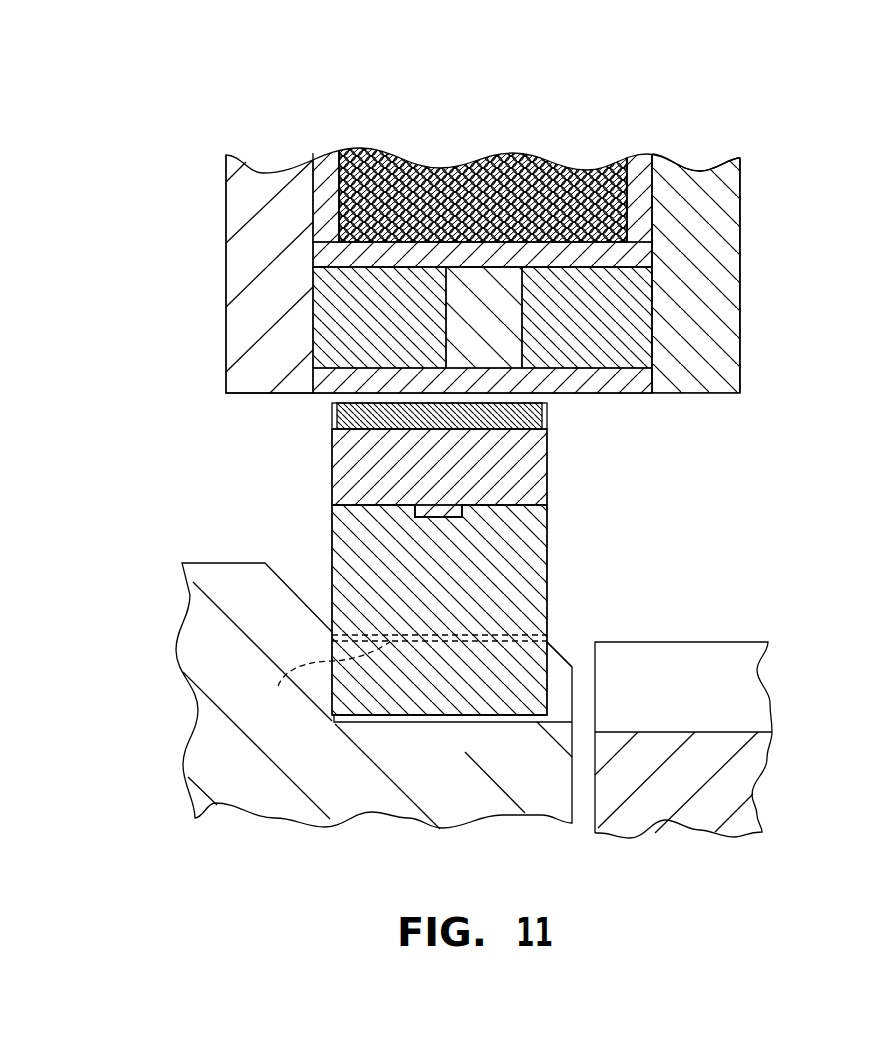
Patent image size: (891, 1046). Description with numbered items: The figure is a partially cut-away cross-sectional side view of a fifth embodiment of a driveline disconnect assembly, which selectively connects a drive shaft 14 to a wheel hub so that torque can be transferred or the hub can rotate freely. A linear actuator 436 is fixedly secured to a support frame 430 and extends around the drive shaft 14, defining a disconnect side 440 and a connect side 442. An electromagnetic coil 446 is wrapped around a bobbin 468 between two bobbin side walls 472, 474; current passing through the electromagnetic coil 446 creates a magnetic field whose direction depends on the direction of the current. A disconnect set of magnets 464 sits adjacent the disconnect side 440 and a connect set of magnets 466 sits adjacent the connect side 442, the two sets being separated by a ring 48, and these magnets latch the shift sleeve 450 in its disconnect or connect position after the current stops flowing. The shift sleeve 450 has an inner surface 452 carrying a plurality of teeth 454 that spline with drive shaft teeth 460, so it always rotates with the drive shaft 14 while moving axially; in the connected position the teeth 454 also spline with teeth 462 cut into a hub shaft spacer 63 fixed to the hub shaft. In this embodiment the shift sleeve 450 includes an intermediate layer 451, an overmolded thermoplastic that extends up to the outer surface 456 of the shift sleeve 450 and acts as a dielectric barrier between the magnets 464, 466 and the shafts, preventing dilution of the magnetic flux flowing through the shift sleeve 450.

The drive shaft 14 is at (400, 810).
The ring 48 is at (522, 303).
The hub shaft spacer 63 is at (692, 813).
The support frame 430 is at (740, 227).
The linear actuator 436 is at (226, 287).
The disconnect side 440 is at (226, 228).
The connect side 442 is at (740, 179).
The electromagnetic coil 446 is at (440, 167).
The shift sleeve 450 is at (332, 542).
The intermediate layer 451 is at (548, 470).
The inner surface 452 is at (402, 673).
The plurality of teeth 454 is at (458, 722).
The outer surface 456 is at (330, 400).
The drive shaft teeth 460 is at (548, 650).
The teeth 462 is at (650, 641).
The disconnect set of magnets 464 is at (313, 317).
The connect set of magnets 466 is at (653, 333).
The bobbin 468 is at (607, 398).
The bobbin side wall 472 is at (313, 206).
The bobbin side wall 474 is at (653, 237).